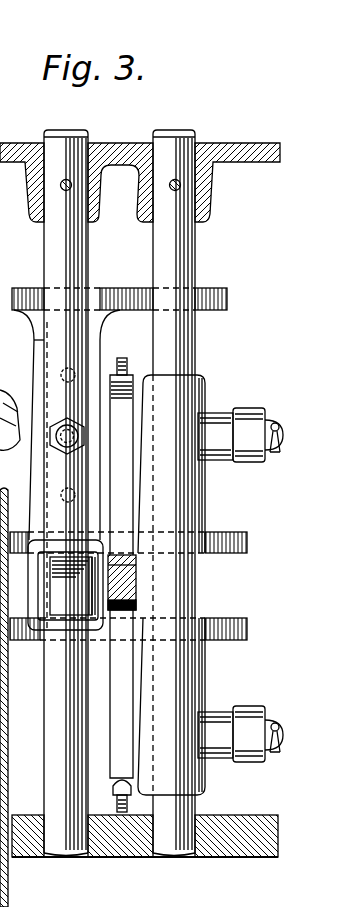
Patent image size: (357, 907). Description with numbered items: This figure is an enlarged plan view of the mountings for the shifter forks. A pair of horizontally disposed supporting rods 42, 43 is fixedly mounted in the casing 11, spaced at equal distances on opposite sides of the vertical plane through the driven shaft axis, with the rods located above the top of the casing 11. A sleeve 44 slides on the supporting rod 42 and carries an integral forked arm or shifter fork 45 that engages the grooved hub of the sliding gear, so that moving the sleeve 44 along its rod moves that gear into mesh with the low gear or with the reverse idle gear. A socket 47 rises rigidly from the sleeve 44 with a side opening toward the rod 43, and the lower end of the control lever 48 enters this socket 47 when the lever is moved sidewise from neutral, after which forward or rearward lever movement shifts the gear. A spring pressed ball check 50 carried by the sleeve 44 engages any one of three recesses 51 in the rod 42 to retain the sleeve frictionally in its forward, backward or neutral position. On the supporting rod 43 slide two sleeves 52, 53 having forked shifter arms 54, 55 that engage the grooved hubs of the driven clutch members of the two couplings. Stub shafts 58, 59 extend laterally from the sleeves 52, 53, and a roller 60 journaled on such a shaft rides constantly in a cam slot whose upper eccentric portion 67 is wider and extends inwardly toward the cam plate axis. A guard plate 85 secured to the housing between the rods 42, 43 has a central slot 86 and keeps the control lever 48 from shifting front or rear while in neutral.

The casing 11 is at (240, 143).
The supporting rod 42 is at (57, 245).
The supporting rod 43 is at (173, 249).
The sleeve 44 is at (35, 483).
The shifter fork 45 is at (227, 297).
The socket 47 is at (65, 585).
The control lever 48 is at (136, 578).
The spring pressed ball check 50 is at (57, 420).
The recesses 51 is at (66, 367).
The sleeve 52 is at (205, 668).
The sleeve 53 is at (205, 500).
The forked shifter arm 54 is at (240, 611).
The forked shifter arm 55 is at (228, 553).
The stub shaft 58 is at (272, 718).
The stub shaft 59 is at (275, 455).
The roller 60 is at (250, 762).
The eccentric portion 67 is at (248, 413).
The guard plate 85 is at (120, 400).
The slot 86 is at (120, 612).